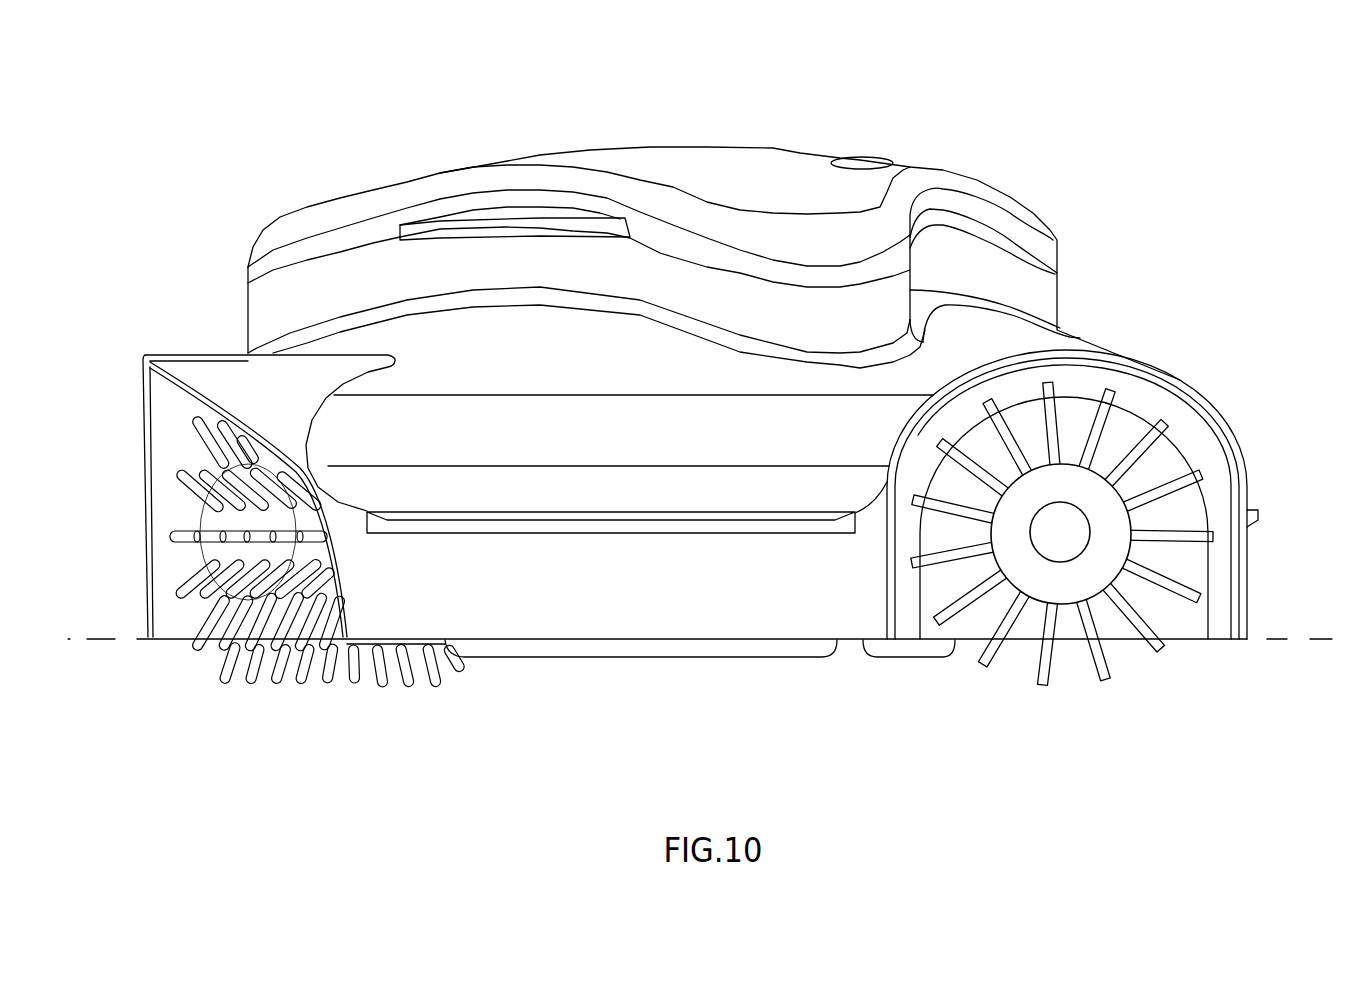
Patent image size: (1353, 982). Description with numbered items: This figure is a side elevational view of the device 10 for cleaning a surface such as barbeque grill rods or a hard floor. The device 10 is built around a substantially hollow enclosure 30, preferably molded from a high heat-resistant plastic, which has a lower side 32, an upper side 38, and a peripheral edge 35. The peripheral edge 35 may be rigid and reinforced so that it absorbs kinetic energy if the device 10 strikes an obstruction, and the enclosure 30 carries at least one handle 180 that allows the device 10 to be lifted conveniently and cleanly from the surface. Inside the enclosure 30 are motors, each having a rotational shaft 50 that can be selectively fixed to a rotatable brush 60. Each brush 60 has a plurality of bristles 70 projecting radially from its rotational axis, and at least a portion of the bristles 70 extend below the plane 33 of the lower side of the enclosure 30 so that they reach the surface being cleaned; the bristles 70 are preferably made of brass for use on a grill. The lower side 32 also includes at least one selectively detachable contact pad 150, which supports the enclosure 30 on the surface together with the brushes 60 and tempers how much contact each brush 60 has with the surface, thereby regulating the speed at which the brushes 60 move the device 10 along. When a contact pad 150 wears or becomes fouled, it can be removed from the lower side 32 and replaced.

The device 10 is at (1055, 110).
The handle 180 is at (545, 207).
The upper side 38 is at (800, 155).
The enclosure 30 is at (1065, 343).
The rotatable brush 60 is at (1125, 450).
The rotational shaft 50 is at (1070, 537).
The peripheral edge 35 is at (525, 601).
The plane 33 is at (90, 640).
The contact pad 150 is at (728, 659).
The lower side 32 is at (1185, 640).
The bristles 70 is at (1042, 690).